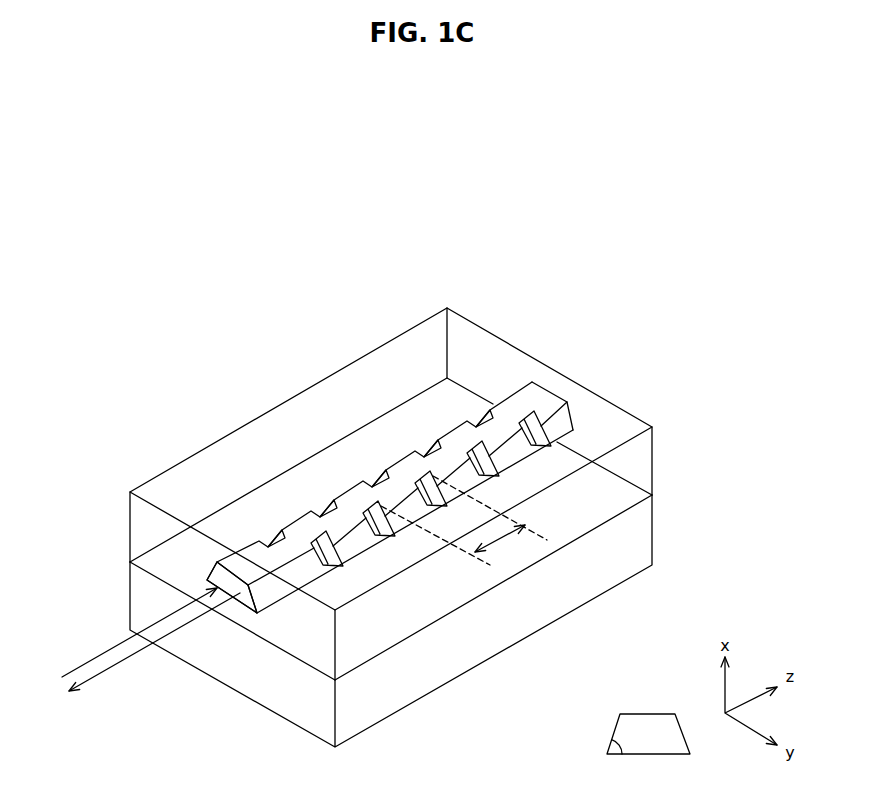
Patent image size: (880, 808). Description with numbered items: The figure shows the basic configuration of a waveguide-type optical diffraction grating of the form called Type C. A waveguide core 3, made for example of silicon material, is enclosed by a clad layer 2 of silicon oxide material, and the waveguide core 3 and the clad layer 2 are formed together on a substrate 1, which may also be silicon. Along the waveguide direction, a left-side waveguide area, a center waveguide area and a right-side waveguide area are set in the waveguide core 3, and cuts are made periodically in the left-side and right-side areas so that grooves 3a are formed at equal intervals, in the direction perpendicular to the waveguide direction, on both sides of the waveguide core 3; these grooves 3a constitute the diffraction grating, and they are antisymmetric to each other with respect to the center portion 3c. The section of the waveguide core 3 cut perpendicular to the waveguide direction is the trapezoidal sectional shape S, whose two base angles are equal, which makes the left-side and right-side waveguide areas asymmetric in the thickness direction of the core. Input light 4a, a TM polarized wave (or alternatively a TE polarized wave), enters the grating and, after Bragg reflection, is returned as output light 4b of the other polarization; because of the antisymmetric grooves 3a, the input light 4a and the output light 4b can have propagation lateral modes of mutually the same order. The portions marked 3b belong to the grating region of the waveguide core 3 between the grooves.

The substrate 1 is at (638, 530).
The clad layer 2 is at (638, 462).
The waveguide core 3 is at (390, 410).
The grooves 3a is at (420, 447).
The second grating portion 3b is at (452, 440).
The center portion 3c is at (387, 251).
The input light 4a is at (127, 636).
The output light 4b is at (138, 653).
The trapezoidal sectional shape S is at (247, 592).